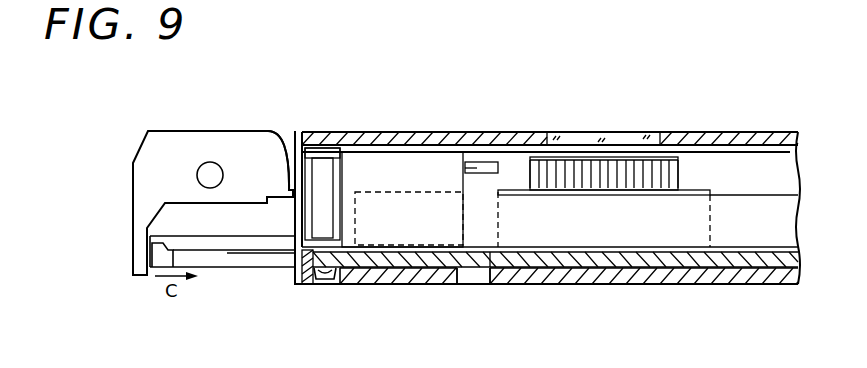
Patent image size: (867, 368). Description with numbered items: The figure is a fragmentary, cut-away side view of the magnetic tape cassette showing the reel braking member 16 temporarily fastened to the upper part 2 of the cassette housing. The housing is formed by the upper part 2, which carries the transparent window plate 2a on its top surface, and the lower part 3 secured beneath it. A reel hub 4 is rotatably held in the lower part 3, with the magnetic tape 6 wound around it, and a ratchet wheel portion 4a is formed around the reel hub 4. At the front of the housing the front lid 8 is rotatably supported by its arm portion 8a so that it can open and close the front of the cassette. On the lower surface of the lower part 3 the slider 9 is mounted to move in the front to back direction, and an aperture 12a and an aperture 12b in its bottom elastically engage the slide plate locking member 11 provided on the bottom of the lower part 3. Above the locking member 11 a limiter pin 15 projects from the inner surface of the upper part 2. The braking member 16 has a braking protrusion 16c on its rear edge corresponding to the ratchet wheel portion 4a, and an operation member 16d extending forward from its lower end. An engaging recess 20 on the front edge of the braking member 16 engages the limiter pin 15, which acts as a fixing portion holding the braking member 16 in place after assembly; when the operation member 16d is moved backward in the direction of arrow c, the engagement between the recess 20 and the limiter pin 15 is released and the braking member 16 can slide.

The upper part 2 is at (535, 133).
The transparent window plate 2a is at (637, 137).
The lower part 3 is at (567, 280).
The reel hub 4 is at (697, 188).
The ratchet wheel portion 4a is at (623, 165).
The magnetic tape 6 is at (758, 238).
The front lid 8 is at (133, 217).
The arm portion 8a is at (253, 147).
The slider 9 is at (622, 285).
The slide plate locking member 11 is at (325, 278).
The aperture 12a is at (468, 276).
The aperture 12b is at (313, 280).
The limiter pin 15 is at (323, 188).
The reel braking member 16 is at (440, 168).
The braking protrusion 16c is at (490, 160).
The operation member 16d is at (140, 275).
The engaging recess 20 is at (320, 150).